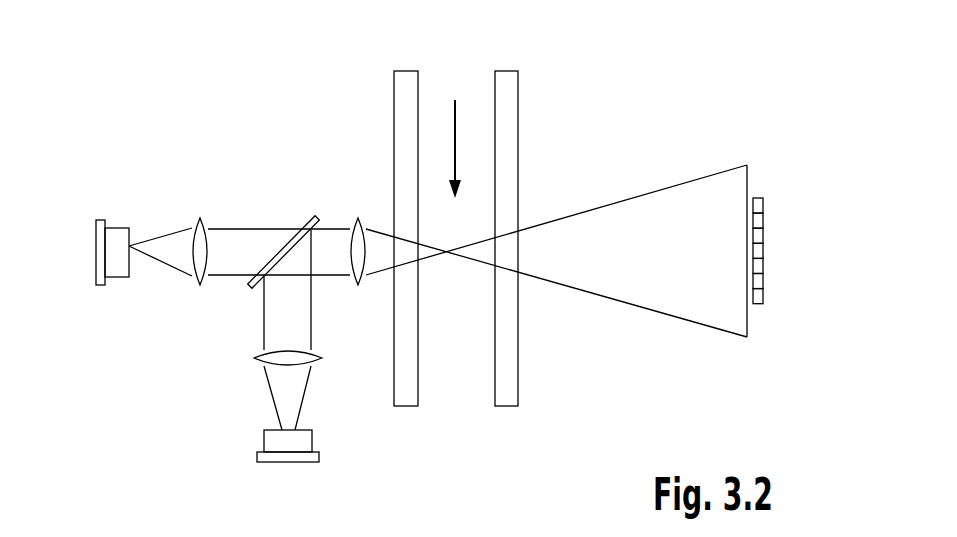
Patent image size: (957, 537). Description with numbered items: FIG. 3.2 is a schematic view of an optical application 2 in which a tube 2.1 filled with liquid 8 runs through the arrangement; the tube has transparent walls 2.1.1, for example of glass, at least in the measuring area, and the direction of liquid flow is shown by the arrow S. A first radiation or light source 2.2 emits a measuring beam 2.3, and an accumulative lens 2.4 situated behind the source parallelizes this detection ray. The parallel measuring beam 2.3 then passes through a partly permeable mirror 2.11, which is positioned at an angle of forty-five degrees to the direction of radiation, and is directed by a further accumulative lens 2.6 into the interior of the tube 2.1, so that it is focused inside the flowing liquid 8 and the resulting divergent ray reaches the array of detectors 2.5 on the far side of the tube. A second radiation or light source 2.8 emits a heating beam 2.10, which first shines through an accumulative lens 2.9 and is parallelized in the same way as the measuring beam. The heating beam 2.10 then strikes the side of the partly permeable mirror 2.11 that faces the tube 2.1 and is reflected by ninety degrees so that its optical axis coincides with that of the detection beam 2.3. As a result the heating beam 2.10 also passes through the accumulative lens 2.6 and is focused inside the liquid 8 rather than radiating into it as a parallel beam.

The optical application 2 is at (734, 128).
The tube 2.1 is at (475, 220).
The transparent walls 2.1.1 is at (402, 94).
The radiation source 2.2 is at (126, 228).
The measuring beam 2.3 is at (230, 265).
The accumulative lens 2.4 is at (200, 243).
The array of detectors 2.5 is at (763, 248).
The accumulative lens 2.6 is at (363, 262).
The second radiation source 2.8 is at (312, 443).
The accumulative lens 2.9 is at (282, 358).
The heating beam 2.10 is at (298, 317).
The partly permeable mirror 2.11 is at (317, 216).
The liquid 8 is at (509, 370).
The direction of liquid flow S is at (456, 140).